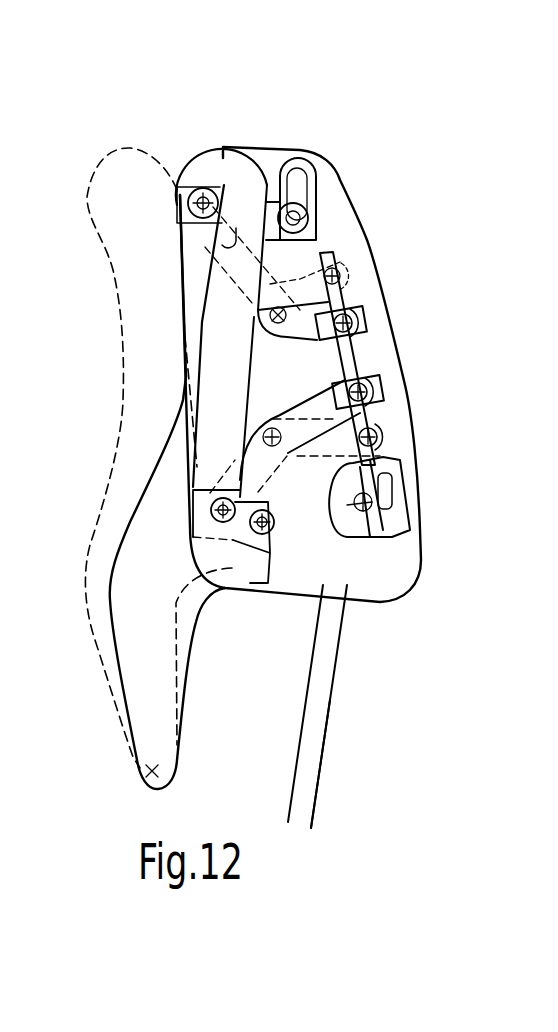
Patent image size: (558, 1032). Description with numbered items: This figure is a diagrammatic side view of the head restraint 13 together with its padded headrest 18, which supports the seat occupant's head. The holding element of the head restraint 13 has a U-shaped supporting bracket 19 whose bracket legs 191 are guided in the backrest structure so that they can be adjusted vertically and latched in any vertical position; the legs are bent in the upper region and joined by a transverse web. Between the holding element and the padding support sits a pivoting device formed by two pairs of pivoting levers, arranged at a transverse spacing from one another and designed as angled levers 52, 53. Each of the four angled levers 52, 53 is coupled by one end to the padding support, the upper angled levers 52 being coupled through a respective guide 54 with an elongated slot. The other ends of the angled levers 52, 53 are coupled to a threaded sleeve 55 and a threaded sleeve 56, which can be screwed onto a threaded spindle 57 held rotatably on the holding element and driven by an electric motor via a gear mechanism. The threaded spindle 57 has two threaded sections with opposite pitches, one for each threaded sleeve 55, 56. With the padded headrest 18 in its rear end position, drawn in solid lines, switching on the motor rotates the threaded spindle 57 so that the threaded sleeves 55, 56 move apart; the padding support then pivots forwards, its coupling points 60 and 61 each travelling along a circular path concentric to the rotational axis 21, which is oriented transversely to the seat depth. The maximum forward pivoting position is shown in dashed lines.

The head restraint 13 is at (372, 192).
The padded headrest 18 is at (207, 177).
The supporting bracket 19 is at (337, 690).
The bracket legs 191 is at (313, 745).
The rotational axis 21 is at (148, 770).
The upper angled lever 52 is at (315, 190).
The lower angled lever 53 is at (338, 386).
The guide 54 is at (335, 205).
The threaded sleeve 55 is at (365, 308).
The threaded sleeve 56 is at (383, 391).
The threaded spindle 57 is at (352, 345).
The coupling point 60 is at (217, 193).
The coupling point 61 is at (250, 545).